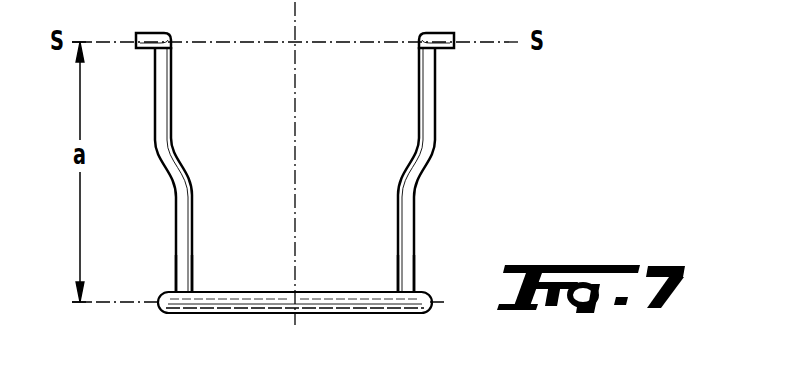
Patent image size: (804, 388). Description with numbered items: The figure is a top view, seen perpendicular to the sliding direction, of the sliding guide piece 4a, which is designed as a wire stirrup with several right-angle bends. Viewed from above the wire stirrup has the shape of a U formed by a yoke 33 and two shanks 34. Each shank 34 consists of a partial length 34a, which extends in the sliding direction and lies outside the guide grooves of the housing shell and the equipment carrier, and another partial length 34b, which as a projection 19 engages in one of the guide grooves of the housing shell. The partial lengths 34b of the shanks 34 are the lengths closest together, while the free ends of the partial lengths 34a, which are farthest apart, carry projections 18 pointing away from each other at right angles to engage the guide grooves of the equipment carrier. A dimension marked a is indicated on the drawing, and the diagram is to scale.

The sliding guide piece 4a is at (460, 142).
The projection 18 is at (152, 47).
The projection 19 is at (193, 255).
The yoke 33 is at (276, 299).
The shank 34 is at (300, 169).
The partial length 34a is at (172, 112).
The partial length 34b is at (194, 200).